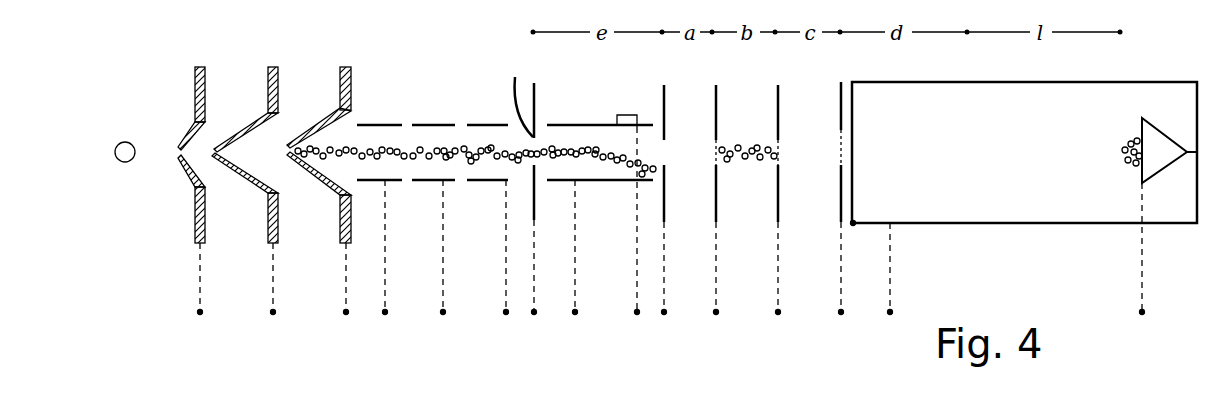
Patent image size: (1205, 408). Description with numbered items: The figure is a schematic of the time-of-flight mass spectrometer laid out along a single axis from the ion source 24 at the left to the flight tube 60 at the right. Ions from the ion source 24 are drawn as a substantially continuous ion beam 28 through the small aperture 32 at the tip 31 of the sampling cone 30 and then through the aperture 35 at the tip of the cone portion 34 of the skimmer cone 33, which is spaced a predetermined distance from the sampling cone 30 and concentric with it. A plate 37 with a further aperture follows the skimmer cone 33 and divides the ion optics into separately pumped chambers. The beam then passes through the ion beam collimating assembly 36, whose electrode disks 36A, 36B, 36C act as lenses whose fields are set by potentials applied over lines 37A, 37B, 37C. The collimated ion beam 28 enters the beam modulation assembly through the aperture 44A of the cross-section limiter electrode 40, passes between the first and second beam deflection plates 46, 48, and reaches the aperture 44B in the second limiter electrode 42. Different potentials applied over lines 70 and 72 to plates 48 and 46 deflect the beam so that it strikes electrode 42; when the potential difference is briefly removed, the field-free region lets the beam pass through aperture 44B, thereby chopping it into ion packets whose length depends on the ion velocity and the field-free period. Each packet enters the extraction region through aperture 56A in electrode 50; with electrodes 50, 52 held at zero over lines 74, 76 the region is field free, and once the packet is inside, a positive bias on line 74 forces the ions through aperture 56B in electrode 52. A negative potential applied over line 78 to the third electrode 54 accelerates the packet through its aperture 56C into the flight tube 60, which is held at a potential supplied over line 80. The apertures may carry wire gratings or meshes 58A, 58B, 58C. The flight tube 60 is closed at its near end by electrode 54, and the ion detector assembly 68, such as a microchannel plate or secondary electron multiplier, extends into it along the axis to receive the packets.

The ion source 24 is at (120, 162).
The ion beam 28 is at (398, 152).
The sampling cone 30 is at (200, 67).
The tip of the cone 31 is at (186, 131).
The aperture 32 is at (178, 152).
The skimmer cone 33 is at (273, 67).
The cone portion 34 is at (260, 118).
The aperture 35 is at (213, 158).
The ion beam collimating assembly 36 is at (432, 74).
The electrode disk 36A is at (384, 124).
The electrode disk 36B is at (432, 124).
The electrode disk 36C is at (485, 102).
The plate 37 is at (345, 67).
The line 37A is at (386, 216).
The line 37B is at (444, 226).
The line 37C is at (506, 276).
The ion beam cross-section limiter plate 40 is at (537, 90).
The ion beam cross-section limiter plate 42 is at (664, 93).
The aperture 44A is at (519, 95).
The aperture 44B is at (668, 140).
The first beam deflection plate 46 is at (585, 124).
The second beam deflection plate 48 is at (607, 181).
The electrode 50 is at (716, 93).
The electrode 52 is at (778, 93).
The third electrode 54 is at (840, 108).
The aperture 56A is at (719, 140).
The aperture 56B is at (781, 140).
The aperture 56C is at (842, 130).
The wire grating, grid, or mesh 58A is at (713, 158).
The wire grating, grid, or mesh 58B is at (772, 162).
The wire grating, grid, or mesh 58C is at (845, 156).
The metal flight tube 60 is at (937, 82).
The ion detector assembly 68 is at (1142, 125).
The line 70 is at (576, 240).
The line 72 is at (638, 273).
The line 74 is at (716, 236).
The line 76 is at (778, 265).
The line 78 is at (841, 262).
The line 80 is at (890, 259).